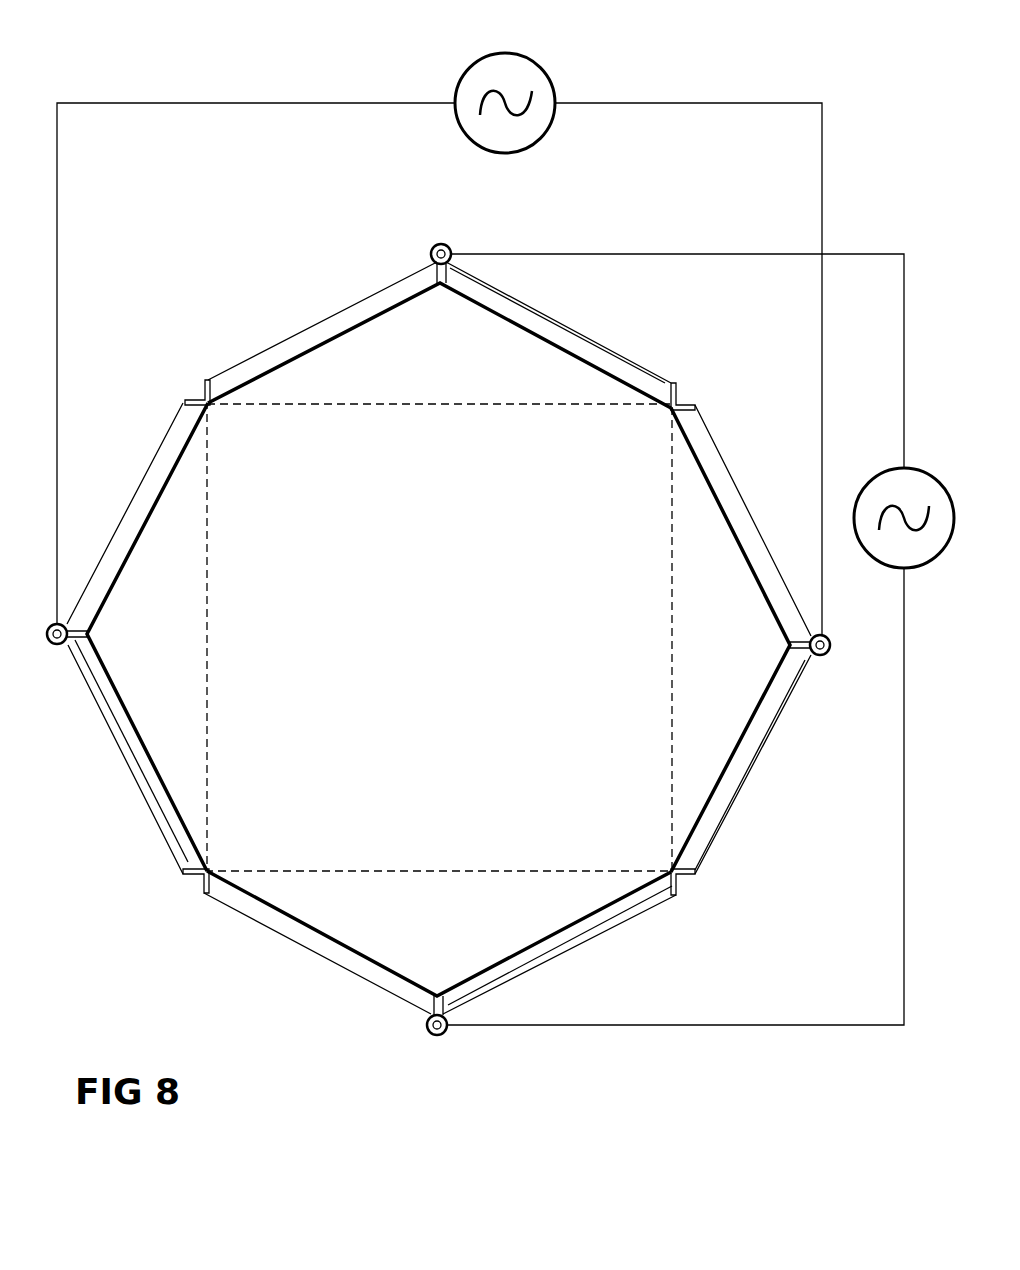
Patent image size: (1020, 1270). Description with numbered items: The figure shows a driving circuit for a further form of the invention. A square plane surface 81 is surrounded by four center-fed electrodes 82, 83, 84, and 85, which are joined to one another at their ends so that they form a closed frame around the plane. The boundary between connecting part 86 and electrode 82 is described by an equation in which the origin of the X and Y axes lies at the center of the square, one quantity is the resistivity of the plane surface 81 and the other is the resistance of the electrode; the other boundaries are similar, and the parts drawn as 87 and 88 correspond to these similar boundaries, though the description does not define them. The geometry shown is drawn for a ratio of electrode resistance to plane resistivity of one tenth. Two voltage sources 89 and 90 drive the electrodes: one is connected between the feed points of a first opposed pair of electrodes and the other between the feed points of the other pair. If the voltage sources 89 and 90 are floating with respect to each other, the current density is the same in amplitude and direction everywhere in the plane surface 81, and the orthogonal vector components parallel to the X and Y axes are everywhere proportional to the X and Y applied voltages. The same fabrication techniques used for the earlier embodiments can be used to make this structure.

The plane surface 81 is at (638, 502).
The center-fed electrode 82 is at (343, 312).
The center-fed electrode 83 is at (135, 525).
The center-fed electrode 84 is at (560, 940).
The center-fed electrode 85 is at (745, 535).
The connecting part 86 is at (555, 385).
The electrode 87 is at (178, 750).
The electrode 88 is at (560, 900).
The voltage source 89 is at (720, 698).
The voltage source 90 is at (532, 60).